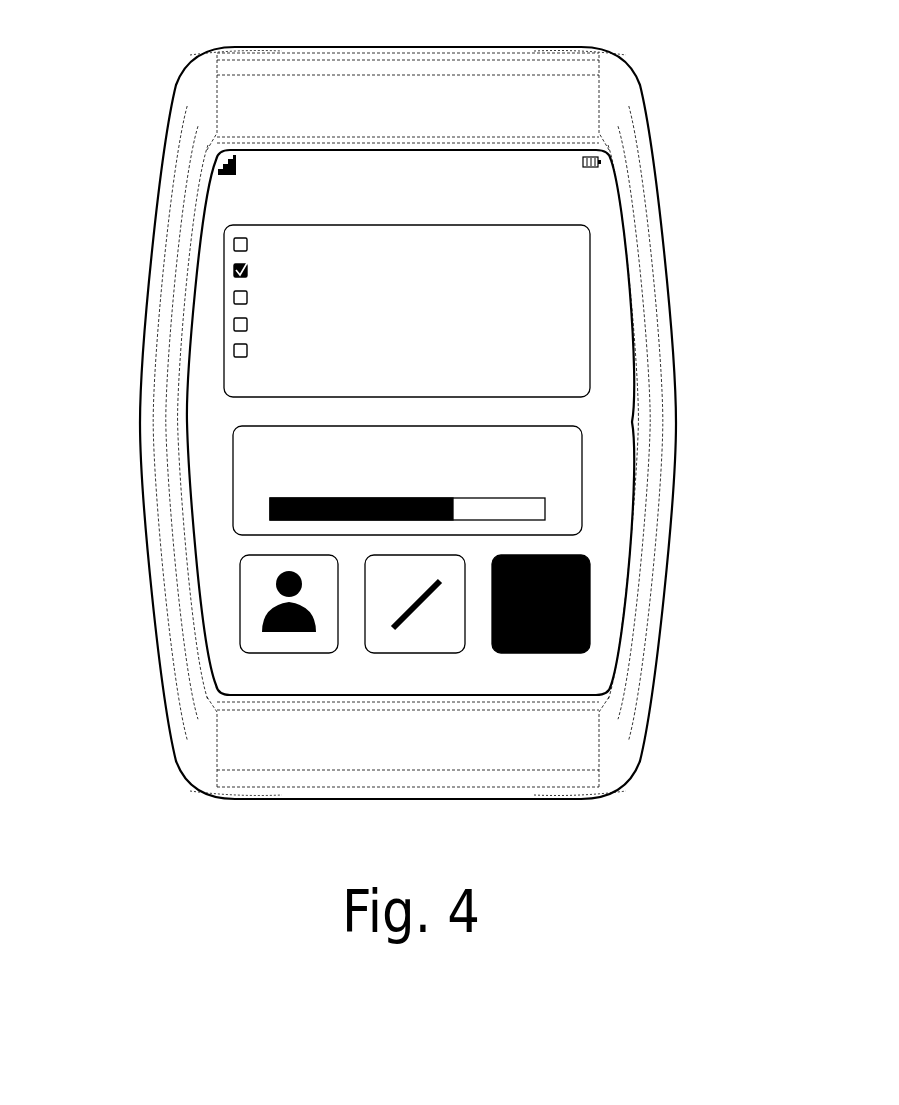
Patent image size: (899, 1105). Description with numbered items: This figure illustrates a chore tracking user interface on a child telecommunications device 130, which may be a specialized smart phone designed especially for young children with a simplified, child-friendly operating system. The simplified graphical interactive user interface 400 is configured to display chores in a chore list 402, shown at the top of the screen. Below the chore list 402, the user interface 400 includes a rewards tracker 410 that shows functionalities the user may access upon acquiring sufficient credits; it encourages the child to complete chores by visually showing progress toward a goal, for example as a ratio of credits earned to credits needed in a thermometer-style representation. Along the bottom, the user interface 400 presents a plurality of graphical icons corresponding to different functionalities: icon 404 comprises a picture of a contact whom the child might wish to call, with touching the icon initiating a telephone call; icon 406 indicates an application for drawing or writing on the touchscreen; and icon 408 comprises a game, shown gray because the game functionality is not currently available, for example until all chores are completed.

The child telecommunications device 130 is at (183, 63).
The graphical interactive user interface 400 is at (130, 153).
The chore list 402 is at (610, 312).
The icon 404 is at (288, 654).
The icon 406 is at (413, 654).
The icon 408 is at (540, 654).
The rewards tracker 410 is at (607, 498).